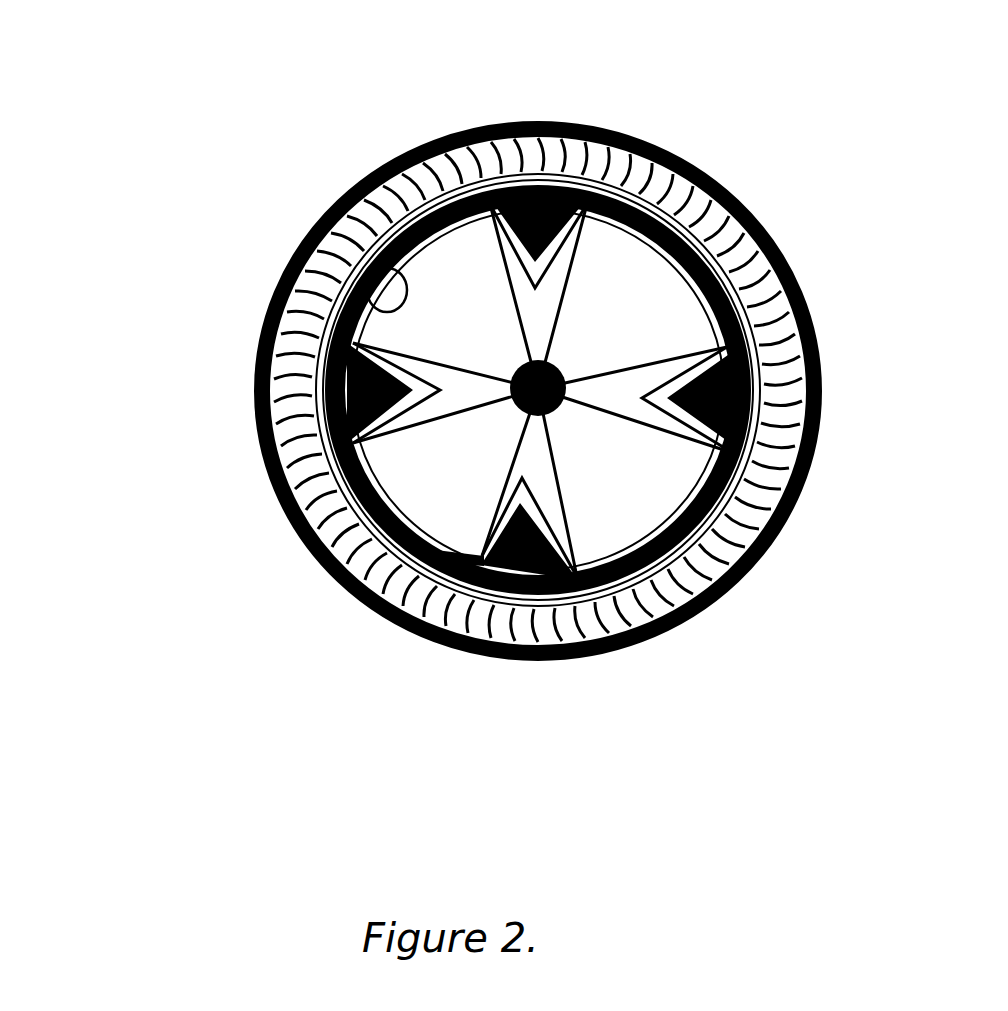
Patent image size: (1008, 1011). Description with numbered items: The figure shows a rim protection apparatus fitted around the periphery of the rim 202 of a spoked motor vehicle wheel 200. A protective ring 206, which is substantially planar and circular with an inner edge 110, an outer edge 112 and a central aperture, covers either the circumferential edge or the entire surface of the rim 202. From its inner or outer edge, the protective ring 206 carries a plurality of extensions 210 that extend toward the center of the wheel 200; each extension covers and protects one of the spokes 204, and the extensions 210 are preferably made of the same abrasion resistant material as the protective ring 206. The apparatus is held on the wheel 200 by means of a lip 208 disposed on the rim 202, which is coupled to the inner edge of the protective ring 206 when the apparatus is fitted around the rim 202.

The motor vehicle wheel 200 is at (486, 397).
The rim 202 is at (384, 560).
The spokes 204 is at (610, 310).
The protective ring 206 is at (802, 283).
The lip 208 is at (357, 245).
The extensions 210 is at (538, 182).
The inner edge 110 is at (373, 270).
The outer edge 112 is at (320, 383).